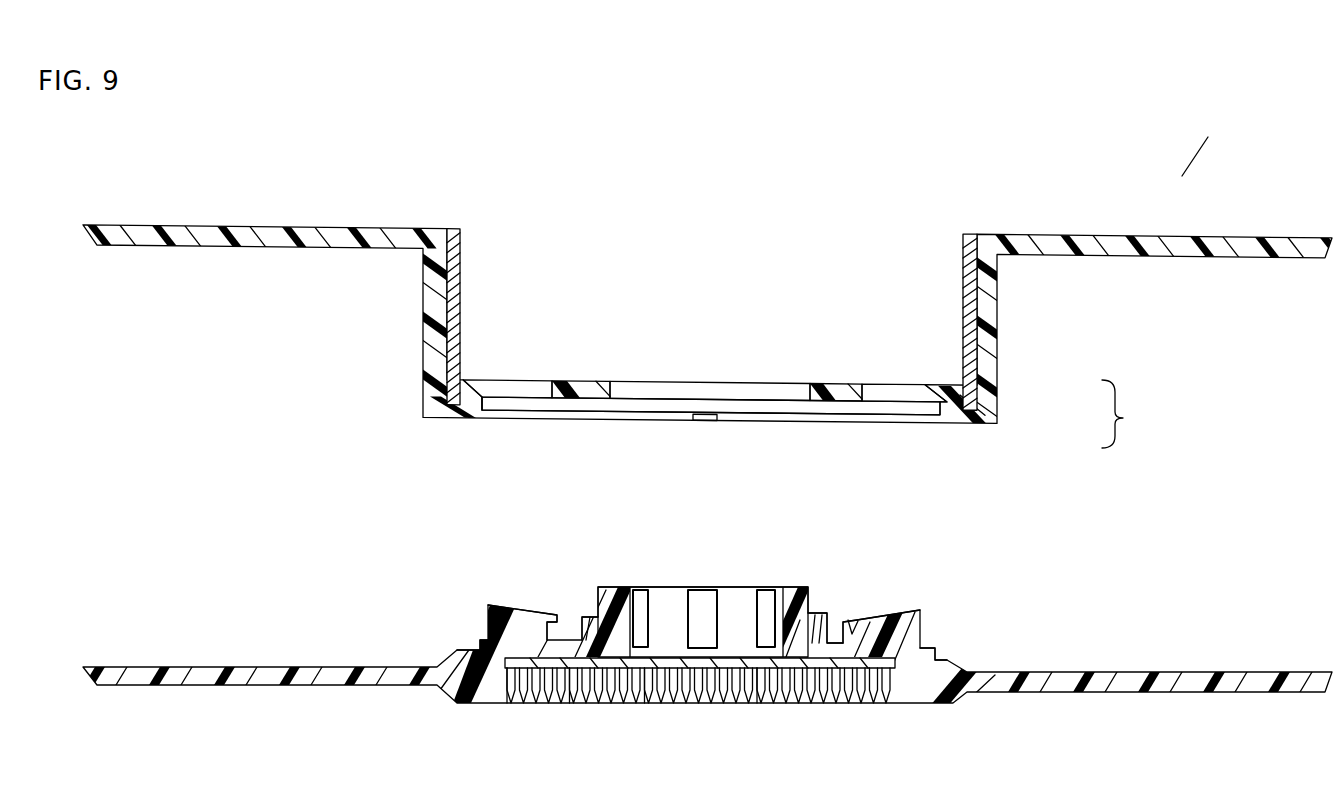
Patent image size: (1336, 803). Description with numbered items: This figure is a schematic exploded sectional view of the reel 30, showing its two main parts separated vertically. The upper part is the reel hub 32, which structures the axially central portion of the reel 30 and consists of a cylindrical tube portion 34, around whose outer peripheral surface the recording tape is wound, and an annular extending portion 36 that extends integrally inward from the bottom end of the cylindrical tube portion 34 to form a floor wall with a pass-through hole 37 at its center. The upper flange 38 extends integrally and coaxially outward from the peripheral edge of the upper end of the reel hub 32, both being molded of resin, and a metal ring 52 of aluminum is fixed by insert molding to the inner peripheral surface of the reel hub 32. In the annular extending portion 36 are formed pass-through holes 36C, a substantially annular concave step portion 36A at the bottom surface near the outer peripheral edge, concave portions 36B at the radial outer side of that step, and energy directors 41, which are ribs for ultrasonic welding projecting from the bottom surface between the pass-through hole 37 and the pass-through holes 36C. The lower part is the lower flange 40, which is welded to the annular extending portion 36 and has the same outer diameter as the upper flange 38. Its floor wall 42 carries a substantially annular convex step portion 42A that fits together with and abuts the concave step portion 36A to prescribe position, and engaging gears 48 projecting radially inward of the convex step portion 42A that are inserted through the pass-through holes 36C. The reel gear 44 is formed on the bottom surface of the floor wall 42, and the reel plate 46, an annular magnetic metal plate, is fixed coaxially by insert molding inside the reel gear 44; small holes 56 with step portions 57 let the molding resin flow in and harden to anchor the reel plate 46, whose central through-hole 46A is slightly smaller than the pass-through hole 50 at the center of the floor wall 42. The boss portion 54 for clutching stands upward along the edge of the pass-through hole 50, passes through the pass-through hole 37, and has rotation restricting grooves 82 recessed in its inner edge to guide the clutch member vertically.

The reel 30 is at (1180, 178).
The reel hub 32 is at (1131, 414).
The cylindrical tube portion 34 is at (1000, 363).
The annular extending portion 36 is at (948, 422).
The concave step portion 36A is at (483, 413).
The concave portions 36B is at (708, 422).
The pass-through holes 36C is at (536, 349).
The pass-through hole 37 is at (603, 390).
The upper flange 38 is at (1160, 250).
The lower flange 40 is at (1200, 672).
The energy directors 41 is at (568, 400).
The floor wall 42 is at (942, 657).
The convex step portion 42A is at (480, 639).
The reel gear 44 is at (520, 703).
The reel plate 46 is at (862, 672).
The through-hole 46A is at (650, 690).
The engaging gears 48 is at (524, 605).
The pass-through hole 50 is at (757, 658).
The metal ring 52 is at (962, 250).
The boss portion for clutching 54 is at (793, 603).
The small holes 56 is at (577, 703).
The step portions 57 is at (605, 690).
The rotation restricting grooves 82 is at (698, 617).